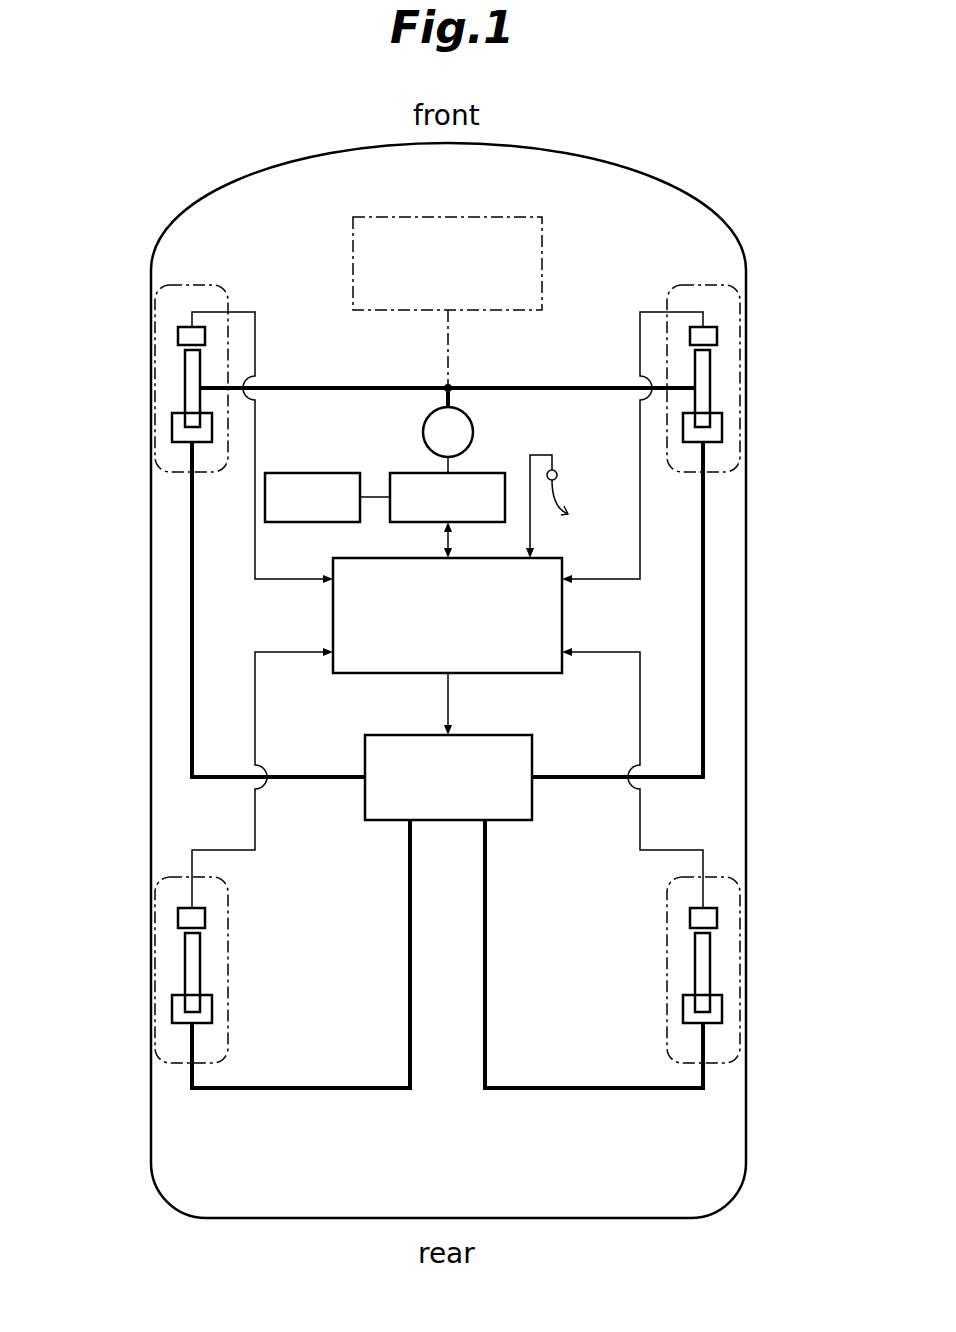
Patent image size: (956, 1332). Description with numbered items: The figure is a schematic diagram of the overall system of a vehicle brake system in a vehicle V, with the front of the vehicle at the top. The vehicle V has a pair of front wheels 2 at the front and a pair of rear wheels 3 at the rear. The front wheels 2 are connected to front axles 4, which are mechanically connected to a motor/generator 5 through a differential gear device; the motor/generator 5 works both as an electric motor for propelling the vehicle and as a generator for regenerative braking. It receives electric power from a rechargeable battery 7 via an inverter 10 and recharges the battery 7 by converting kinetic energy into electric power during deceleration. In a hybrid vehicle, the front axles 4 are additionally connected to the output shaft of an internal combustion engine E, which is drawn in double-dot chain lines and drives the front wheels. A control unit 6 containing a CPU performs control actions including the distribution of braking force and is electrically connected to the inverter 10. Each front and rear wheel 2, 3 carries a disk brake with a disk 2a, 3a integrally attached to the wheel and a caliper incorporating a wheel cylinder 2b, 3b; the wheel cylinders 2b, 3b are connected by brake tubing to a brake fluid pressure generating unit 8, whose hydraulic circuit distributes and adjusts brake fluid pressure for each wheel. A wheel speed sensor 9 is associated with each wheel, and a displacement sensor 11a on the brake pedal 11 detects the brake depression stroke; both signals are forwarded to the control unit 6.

The vehicle V is at (605, 165).
The internal combustion engine E is at (545, 240).
The front wheel 2 is at (158, 290).
The disk 2a is at (185, 383).
The wheel cylinder 2b is at (172, 430).
The rear wheel 3 is at (160, 1062).
The disk 3a is at (185, 960).
The wheel cylinder 3b is at (172, 1012).
The front axle 4 is at (340, 387).
The motor/generator 5 is at (470, 418).
The control unit 6 is at (333, 622).
The battery 7 is at (312, 471).
The brake fluid pressure generating unit 8 is at (497, 735).
The wheel speed sensor 9 is at (178, 336).
The inverter 10 is at (405, 471).
The brake pedal 11 is at (578, 489).
The displacement sensor 11a is at (558, 475).